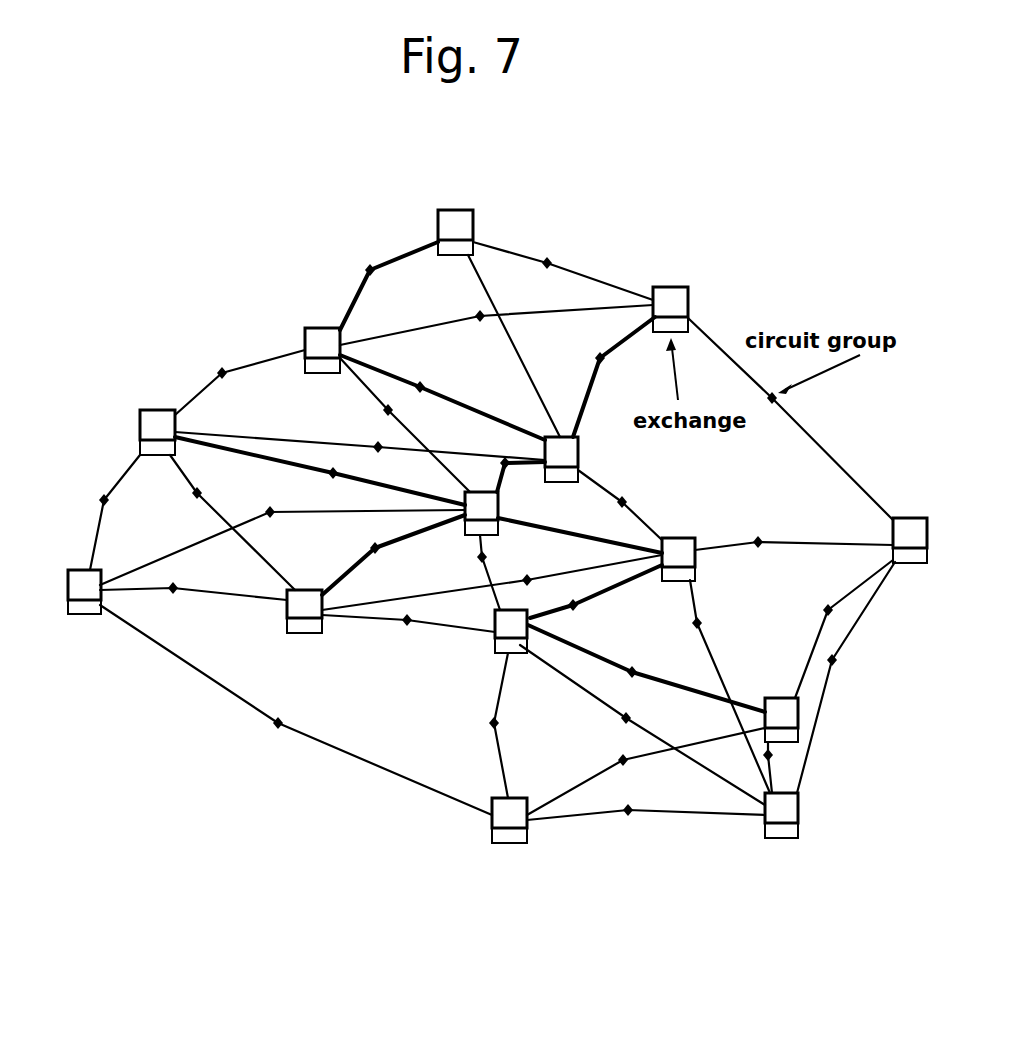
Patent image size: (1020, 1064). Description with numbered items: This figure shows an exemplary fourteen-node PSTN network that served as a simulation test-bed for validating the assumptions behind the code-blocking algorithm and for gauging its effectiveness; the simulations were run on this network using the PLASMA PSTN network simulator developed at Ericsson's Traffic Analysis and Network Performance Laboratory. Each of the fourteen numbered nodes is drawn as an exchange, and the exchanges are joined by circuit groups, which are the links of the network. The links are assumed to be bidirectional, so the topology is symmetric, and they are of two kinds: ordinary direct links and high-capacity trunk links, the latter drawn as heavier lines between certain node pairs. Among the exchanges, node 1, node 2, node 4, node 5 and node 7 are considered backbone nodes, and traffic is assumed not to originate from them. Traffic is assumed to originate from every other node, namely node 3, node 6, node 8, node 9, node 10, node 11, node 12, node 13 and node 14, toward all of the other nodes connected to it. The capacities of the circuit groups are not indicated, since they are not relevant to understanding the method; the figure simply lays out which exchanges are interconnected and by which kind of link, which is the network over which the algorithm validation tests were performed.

The backbone node 1 is at (690, 579).
The backbone node 2 is at (519, 653).
The network node 3 is at (297, 633).
The backbone node 4 is at (494, 533).
The backbone node 5 is at (566, 481).
The network node 6 is at (791, 742).
The backbone node 7 is at (908, 563).
The network node 8 is at (657, 330).
The network node 9 is at (460, 252).
The network node 10 is at (312, 372).
The network node 11 is at (165, 455).
The network node 12 is at (101, 604).
The network node 13 is at (510, 843).
The network node 14 is at (773, 838).